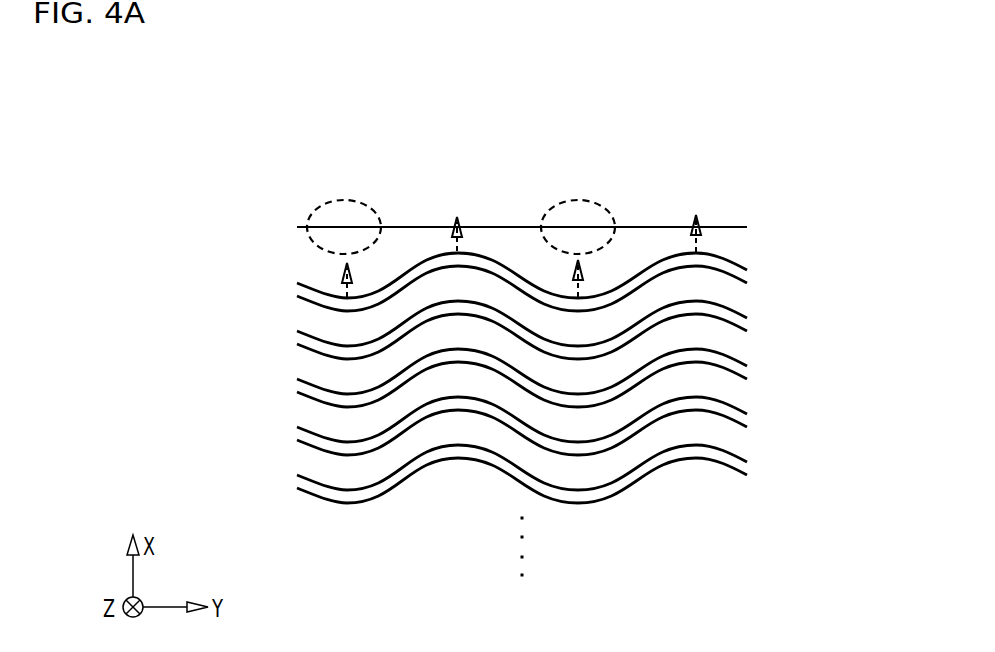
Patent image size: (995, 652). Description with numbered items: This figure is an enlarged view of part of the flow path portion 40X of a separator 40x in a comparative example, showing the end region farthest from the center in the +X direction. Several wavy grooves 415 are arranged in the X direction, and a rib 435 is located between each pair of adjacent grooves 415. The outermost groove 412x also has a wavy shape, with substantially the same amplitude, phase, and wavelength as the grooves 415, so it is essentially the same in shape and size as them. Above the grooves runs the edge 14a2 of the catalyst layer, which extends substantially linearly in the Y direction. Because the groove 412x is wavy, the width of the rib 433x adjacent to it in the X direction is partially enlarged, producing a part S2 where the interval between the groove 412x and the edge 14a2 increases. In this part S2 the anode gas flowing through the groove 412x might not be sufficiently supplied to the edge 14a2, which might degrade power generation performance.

The edge 14a2 is at (445, 227).
The rib 433x is at (318, 252).
The part S2 is at (348, 200).
The groove 412x is at (748, 283).
The grooves 415 is at (748, 331).
The rib 435 is at (308, 312).
The separator 40x is at (765, 167).
The flow path portion 40X is at (800, 243).